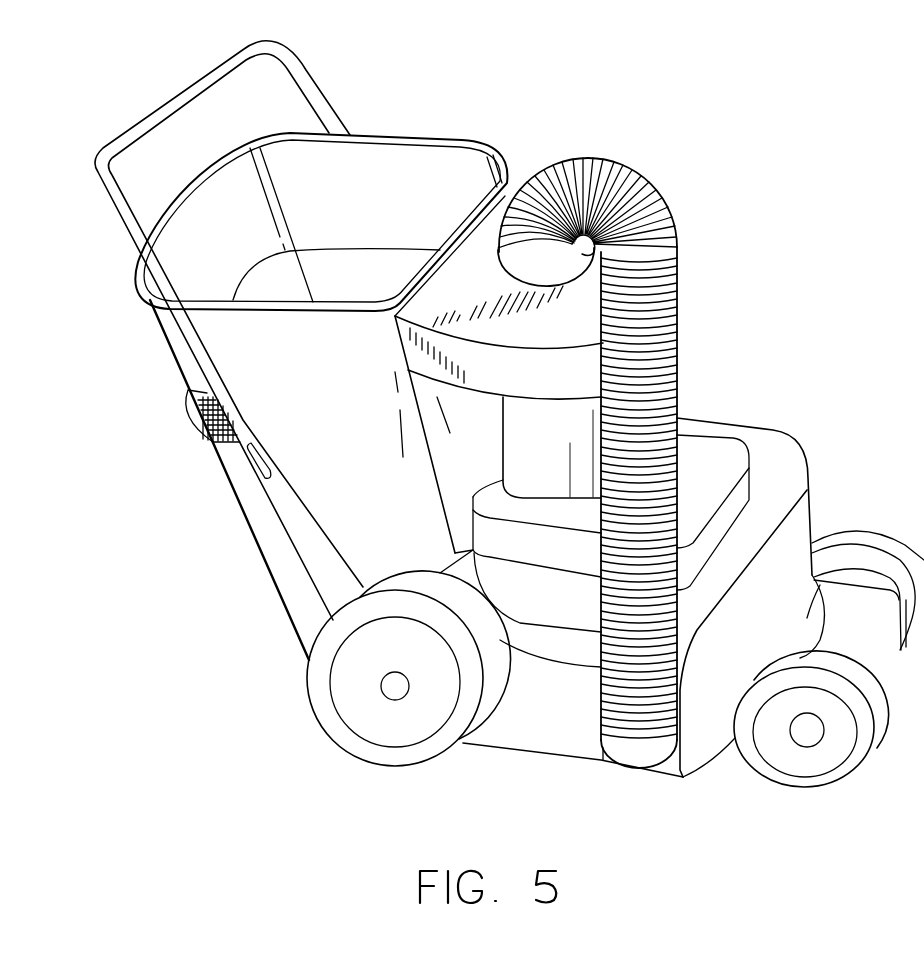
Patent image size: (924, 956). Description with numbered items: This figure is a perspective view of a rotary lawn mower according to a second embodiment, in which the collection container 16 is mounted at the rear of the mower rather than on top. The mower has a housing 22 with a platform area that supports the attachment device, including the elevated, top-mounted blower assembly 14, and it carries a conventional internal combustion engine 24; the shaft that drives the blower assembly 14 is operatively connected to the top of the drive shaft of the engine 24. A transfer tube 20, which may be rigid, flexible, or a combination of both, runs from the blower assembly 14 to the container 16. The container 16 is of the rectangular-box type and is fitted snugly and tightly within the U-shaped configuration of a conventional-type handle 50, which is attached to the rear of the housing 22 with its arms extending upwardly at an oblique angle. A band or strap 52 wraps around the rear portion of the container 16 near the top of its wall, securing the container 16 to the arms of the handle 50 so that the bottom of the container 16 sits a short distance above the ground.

The blower assembly 14 is at (395, 372).
The collection container 16 is at (367, 505).
The transfer tube 20 is at (680, 275).
The housing 22 is at (828, 441).
The internal combustion engine 24 is at (718, 484).
The U-shaped handle 50 is at (158, 100).
The strap 52 is at (216, 444).